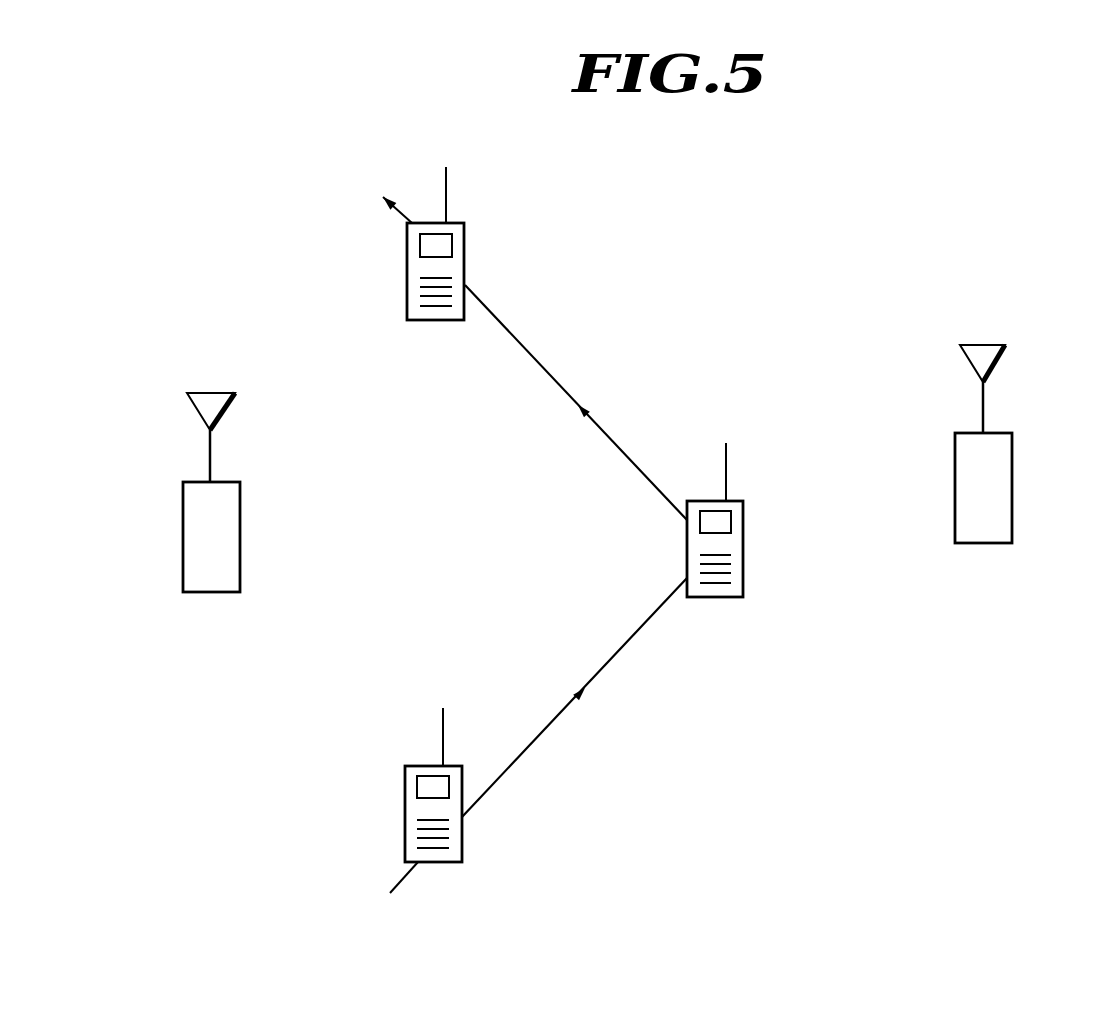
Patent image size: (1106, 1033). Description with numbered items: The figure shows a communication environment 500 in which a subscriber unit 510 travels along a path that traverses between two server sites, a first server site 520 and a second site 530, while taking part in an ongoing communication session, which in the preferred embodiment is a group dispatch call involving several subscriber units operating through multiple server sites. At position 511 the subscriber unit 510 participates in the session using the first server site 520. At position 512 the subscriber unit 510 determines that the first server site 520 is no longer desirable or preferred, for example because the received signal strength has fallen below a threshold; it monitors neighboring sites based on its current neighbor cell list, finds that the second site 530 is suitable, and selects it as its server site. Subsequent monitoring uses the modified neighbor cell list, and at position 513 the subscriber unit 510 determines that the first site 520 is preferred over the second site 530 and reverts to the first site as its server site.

The communication environment 500 is at (900, 852).
The subscriber unit 510 is at (582, 866).
The position 511 is at (382, 818).
The position 512 is at (762, 561).
The position 513 is at (483, 268).
The first server site 520 is at (240, 547).
The second site 530 is at (987, 543).